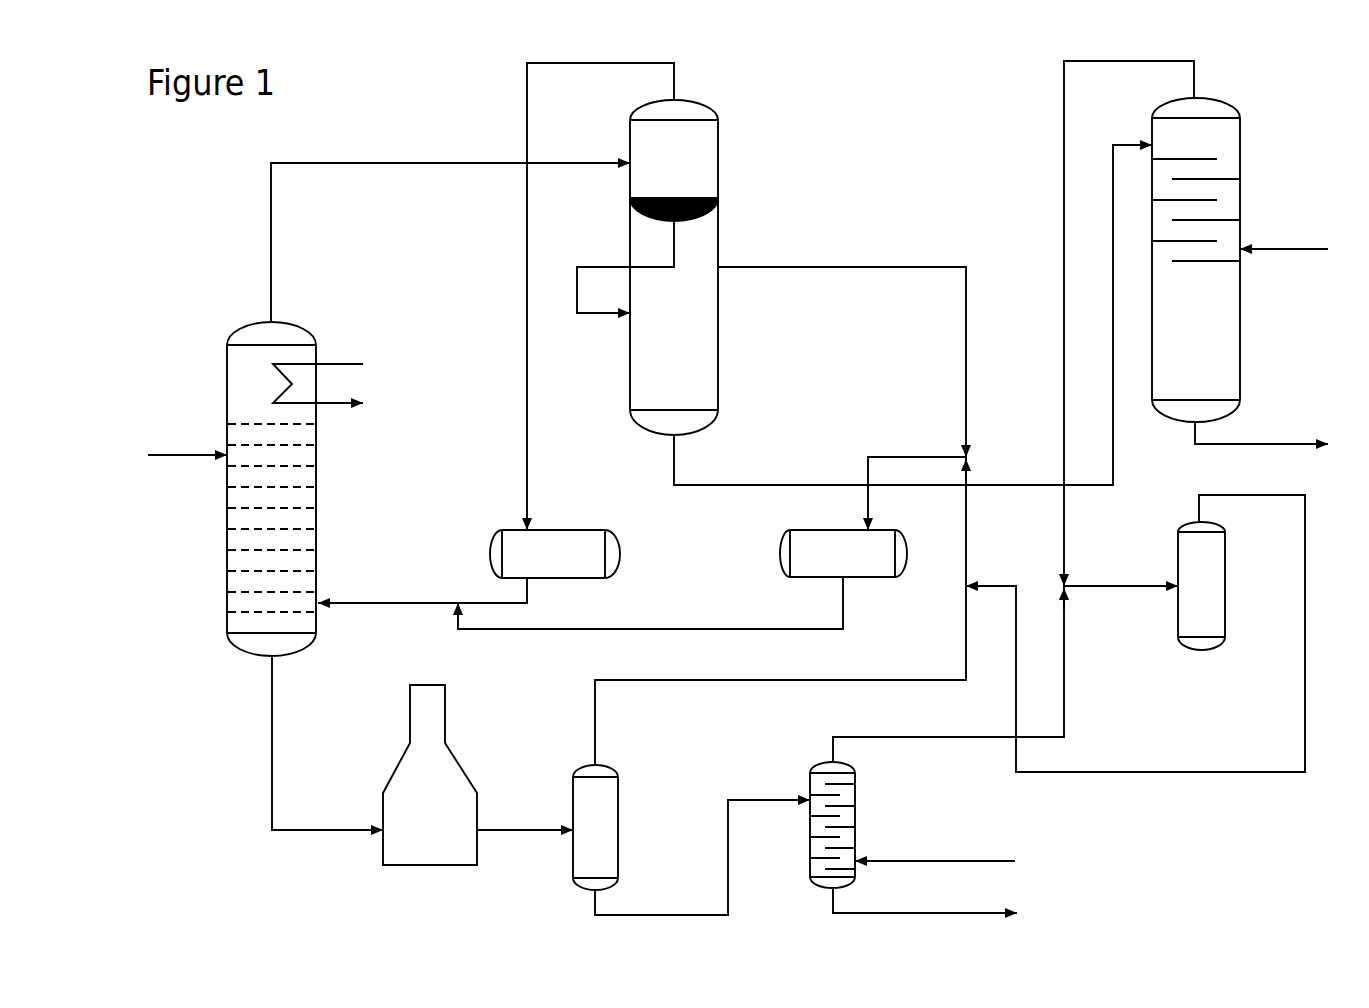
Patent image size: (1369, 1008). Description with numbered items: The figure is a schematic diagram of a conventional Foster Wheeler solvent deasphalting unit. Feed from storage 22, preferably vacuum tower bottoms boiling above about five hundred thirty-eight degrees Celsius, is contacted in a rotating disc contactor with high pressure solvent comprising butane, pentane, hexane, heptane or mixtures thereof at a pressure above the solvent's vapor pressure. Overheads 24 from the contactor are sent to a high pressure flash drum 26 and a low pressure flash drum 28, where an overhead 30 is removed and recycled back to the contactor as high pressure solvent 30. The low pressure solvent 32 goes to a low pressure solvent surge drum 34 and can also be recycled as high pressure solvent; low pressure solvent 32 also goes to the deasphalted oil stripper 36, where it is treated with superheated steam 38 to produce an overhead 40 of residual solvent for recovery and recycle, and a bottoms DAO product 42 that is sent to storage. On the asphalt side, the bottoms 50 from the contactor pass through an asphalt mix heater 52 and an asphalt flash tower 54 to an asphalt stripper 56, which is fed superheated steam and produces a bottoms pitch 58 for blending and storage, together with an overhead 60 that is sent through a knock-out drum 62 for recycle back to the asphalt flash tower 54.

The feed from storage 22 is at (187, 444).
The overheads 24 is at (450, 231).
The high pressure flash drum 26 is at (674, 267).
The low pressure flash drum 28 is at (647, 269).
The overhead / high pressure solvent 30 is at (510, 333).
The low pressure solvent 32 is at (913, 315).
The low pressure solvent surge drum 34 is at (712, 543).
The deasphalted oil (DAO) stripper 36 is at (1210, 260).
The superheated steam 38 is at (1284, 236).
The overhead 40 is at (1143, 336).
The bottoms DAO product 42 is at (1261, 432).
The bottoms 50 is at (327, 743).
The asphalt mix heater 52 is at (430, 775).
The asphalt flash tower 54 is at (691, 840).
The asphalt stripper 56 is at (912, 825).
The bottoms pitch 58 is at (925, 900).
The overhead 60 is at (948, 674).
The knock-out drum 62 is at (1135, 633).